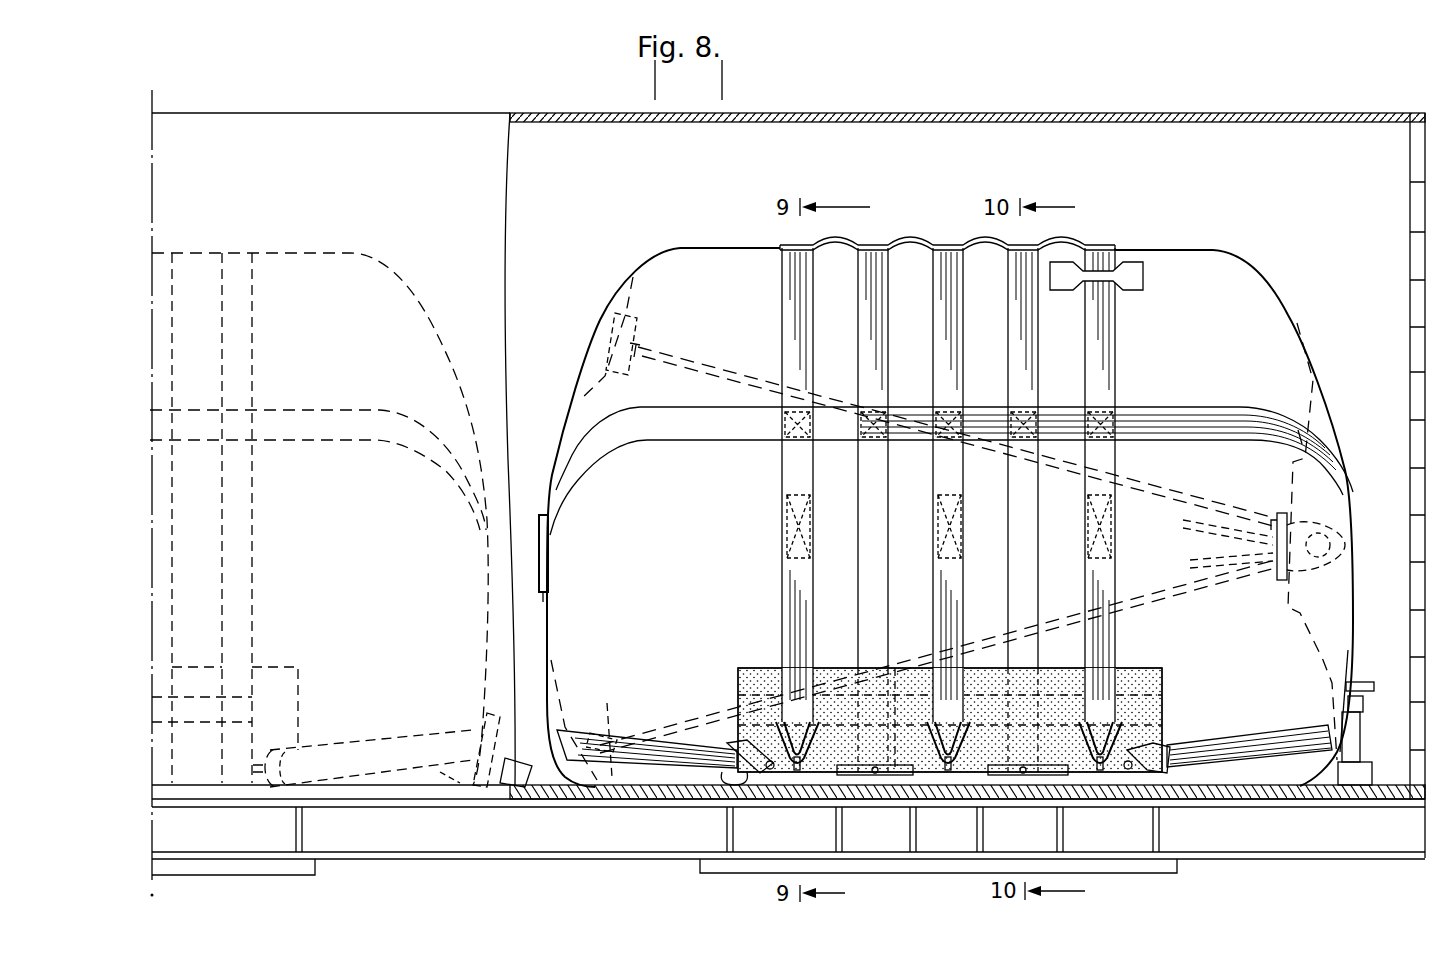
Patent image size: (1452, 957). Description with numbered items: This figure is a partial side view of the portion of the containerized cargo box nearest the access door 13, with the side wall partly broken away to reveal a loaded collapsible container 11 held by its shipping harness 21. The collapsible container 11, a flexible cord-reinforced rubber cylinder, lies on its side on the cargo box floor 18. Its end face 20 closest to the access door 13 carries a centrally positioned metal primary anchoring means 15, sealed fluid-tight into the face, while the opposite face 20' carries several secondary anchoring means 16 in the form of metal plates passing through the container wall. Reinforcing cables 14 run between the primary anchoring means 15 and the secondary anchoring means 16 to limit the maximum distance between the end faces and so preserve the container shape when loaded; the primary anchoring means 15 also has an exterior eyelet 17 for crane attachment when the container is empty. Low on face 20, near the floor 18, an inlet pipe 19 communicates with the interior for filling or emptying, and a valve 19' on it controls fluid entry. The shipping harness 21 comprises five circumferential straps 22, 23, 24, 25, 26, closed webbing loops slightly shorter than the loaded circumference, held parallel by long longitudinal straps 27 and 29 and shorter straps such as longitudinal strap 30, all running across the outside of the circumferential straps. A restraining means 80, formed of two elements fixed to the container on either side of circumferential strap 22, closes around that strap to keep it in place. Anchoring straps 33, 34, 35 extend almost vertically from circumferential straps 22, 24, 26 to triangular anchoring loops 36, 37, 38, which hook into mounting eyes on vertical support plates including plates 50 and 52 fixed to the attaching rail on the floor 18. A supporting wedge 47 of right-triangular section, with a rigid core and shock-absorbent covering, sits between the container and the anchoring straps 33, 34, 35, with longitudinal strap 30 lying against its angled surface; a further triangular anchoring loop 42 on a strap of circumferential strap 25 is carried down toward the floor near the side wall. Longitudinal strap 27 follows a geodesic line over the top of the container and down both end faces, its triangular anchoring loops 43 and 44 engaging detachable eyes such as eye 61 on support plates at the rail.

The collapsible container 11 is at (385, 262).
The access door 13 is at (1408, 401).
The reinforcing cable 14 is at (680, 375).
The primary anchoring means 15 is at (1275, 510).
The secondary anchoring means 16 is at (640, 325).
The eyelet 17 is at (545, 520).
The cargo box floor 18 is at (1362, 785).
The inlet pipe 19 is at (1336, 742).
The valve 19' is at (1374, 711).
The face 20 is at (898, 528).
The face 20' is at (556, 397).
The shipping harness 21 is at (893, 240).
The circumferential strap 22 is at (250, 255).
The circumferential strap 23 is at (172, 255).
The circumferential strap 24 is at (935, 368).
The circumferential strap 25 is at (865, 364).
The circumferential strap 26 is at (785, 360).
The longitudinal strap 27 is at (690, 745).
The longitudinal strap 29 is at (385, 412).
The longitudinal strap 30 is at (192, 700).
The anchoring strap 33 is at (1092, 605).
The anchoring strap 34 is at (945, 620).
The anchoring strap 35 is at (790, 613).
The triangular anchoring loop 36 is at (1120, 750).
The triangular anchoring loop 37 is at (966, 748).
The triangular anchoring loop 38 is at (810, 730).
The triangular anchoring loop 42 is at (1150, 668).
The triangular anchoring loop 43 is at (1165, 745).
The triangular anchoring loop 44 is at (770, 758).
The supporting wedge 47 is at (290, 670).
The vertical support plate 50 is at (1032, 765).
The vertical support plate 52 is at (808, 758).
The detachable eye 61 is at (1135, 775).
The restraining means 80 is at (1148, 282).